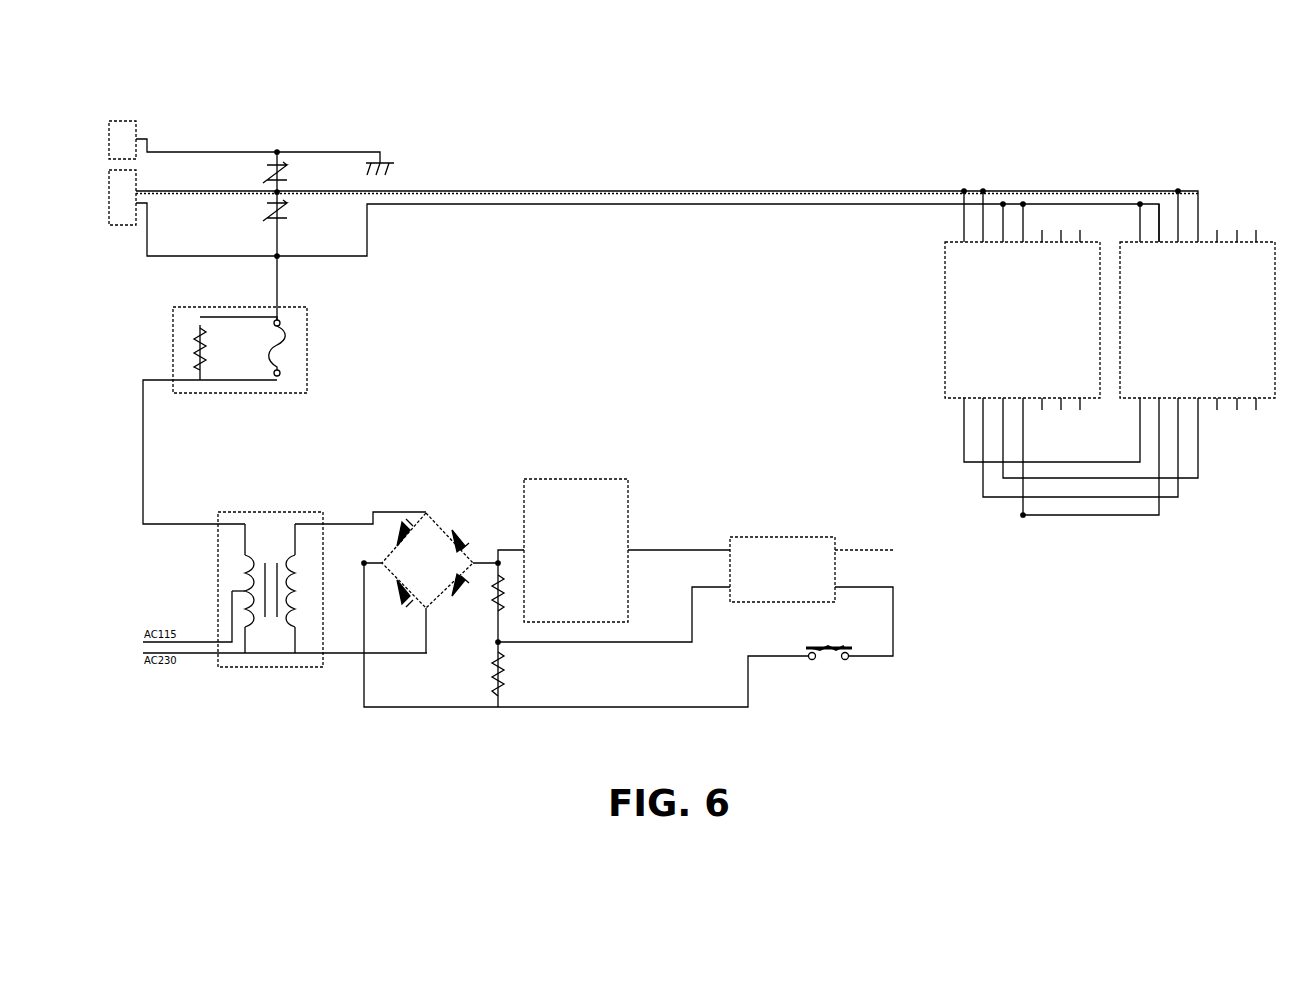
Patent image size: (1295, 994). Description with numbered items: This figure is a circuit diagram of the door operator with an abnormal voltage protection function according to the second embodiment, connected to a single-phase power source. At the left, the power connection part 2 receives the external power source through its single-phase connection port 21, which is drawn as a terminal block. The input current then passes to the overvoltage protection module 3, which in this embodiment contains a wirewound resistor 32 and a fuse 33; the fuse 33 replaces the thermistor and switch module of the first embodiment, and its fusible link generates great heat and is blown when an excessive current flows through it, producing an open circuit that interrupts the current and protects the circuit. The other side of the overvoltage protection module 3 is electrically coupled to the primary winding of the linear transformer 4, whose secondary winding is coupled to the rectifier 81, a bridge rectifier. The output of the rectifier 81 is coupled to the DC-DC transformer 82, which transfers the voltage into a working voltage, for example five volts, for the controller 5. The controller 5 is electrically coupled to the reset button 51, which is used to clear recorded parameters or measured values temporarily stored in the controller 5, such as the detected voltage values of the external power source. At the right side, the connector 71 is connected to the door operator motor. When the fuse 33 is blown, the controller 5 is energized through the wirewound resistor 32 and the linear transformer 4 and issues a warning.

The power connection part 2 is at (96, 141).
The single-phase connection port 21 is at (105, 166).
The overvoltage protection module 3 is at (239, 337).
The wirewound resistor 32 is at (192, 356).
The fuse 33 is at (284, 350).
The linear transformer 4 is at (290, 667).
The controller 5 is at (784, 537).
The reset button 51 is at (840, 665).
The connector 71 is at (1234, 190).
The rectifier 81 is at (447, 606).
The DC-DC transformer 82 is at (636, 604).